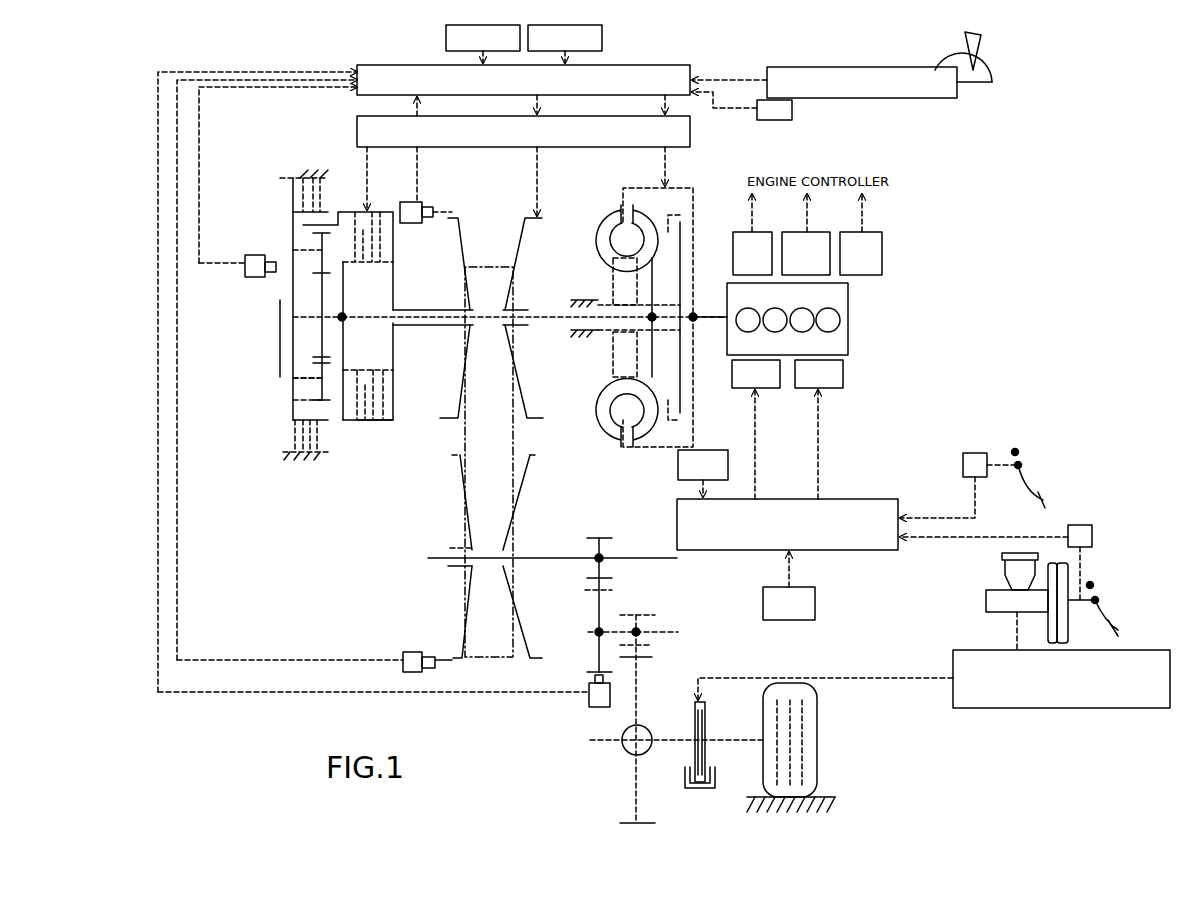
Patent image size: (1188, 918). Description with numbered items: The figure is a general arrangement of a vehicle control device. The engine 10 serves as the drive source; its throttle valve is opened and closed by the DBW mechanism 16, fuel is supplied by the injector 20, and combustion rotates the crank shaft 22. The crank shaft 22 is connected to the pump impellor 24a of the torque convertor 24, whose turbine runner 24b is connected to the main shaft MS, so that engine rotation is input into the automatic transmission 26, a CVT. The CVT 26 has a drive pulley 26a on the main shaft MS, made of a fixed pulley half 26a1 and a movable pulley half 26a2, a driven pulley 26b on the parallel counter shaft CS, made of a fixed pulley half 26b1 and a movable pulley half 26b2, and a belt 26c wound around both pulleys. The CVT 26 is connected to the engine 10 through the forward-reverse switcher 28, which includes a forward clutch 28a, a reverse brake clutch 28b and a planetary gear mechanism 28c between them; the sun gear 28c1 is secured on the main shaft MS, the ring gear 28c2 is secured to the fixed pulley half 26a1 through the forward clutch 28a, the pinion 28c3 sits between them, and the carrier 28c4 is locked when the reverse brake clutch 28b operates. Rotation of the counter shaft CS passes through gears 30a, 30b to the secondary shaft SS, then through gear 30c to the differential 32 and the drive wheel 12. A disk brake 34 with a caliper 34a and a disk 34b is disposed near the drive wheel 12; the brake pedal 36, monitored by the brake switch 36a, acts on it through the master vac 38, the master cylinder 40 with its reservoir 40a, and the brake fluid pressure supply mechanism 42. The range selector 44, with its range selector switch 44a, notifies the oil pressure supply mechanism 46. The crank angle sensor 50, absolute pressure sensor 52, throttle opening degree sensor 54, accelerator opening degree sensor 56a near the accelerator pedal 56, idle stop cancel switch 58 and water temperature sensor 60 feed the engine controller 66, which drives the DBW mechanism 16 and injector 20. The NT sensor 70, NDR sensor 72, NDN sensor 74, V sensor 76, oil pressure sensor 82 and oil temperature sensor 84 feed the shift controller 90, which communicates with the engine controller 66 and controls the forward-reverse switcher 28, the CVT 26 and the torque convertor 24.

The engine 10 is at (848, 352).
The drive wheel 12 is at (817, 715).
The DBW mechanism 16 is at (745, 392).
The injector 20 is at (805, 392).
The crank shaft 22 is at (708, 323).
The torque convertor 24 is at (624, 313).
The pump impellor 24a is at (600, 228).
The turbine runner 24b is at (643, 437).
The automatic transmission 26 is at (524, 426).
The drive pulley 26a is at (492, 306).
The fixed pulley half 26a1 is at (455, 222).
The movable pulley half 26a2 is at (522, 245).
The driven pulley 26b is at (524, 556).
The fixed pulley half 26b1 is at (531, 457).
The movable pulley half 26b2 is at (447, 457).
The belt 26c is at (475, 433).
The forward-reverse switcher 28 is at (303, 309).
The forward clutch 28a is at (354, 263).
The reverse brake clutch 28b is at (293, 187).
The planetary gear mechanism 28c is at (308, 300).
The sun gear 28c1 is at (320, 336).
The ring gear 28c2 is at (360, 423).
The pinion 28c3 is at (310, 383).
The carrier 28c4 is at (290, 400).
The gear 30a is at (600, 538).
The gear 30b is at (597, 650).
The gear 30c is at (640, 615).
The differential 32 is at (626, 752).
The disk brake 34 is at (683, 762).
The caliper 34a is at (698, 788).
The disk 34b is at (696, 735).
The brake pedal 36 is at (1120, 632).
The brake switch 36a is at (1092, 535).
The master vac 38 is at (1068, 617).
The master cylinder 40 is at (984, 593).
The reservoir 40a is at (1005, 568).
The brake fluid pressure supply mechanism 42 is at (1030, 708).
The range selector 44 is at (860, 67).
The range selector switch 44a is at (792, 110).
The oil pressure supply mechanism 46 is at (690, 140).
The crank angle sensor 50 is at (740, 232).
The absolute pressure sensor 52 is at (822, 232).
The throttle opening degree sensor 54 is at (678, 470).
The accelerator pedal 56 is at (1048, 500).
The accelerator opening degree sensor 56a is at (972, 453).
The idle stop cancel switch 58 is at (815, 603).
The water temperature sensor 60 is at (876, 232).
The engine controller 66 is at (837, 550).
The NT sensor 70 is at (245, 258).
The NDR sensor 72 is at (400, 205).
The NDN sensor 74 is at (403, 660).
The V sensor 76 is at (595, 707).
The oil pressure sensor 82 is at (446, 39).
The oil temperature sensor 84 is at (602, 38).
The shift controller 90 is at (693, 67).
The main shaft MS is at (535, 320).
The counter shaft CS is at (518, 563).
The secondary shaft SS is at (665, 632).